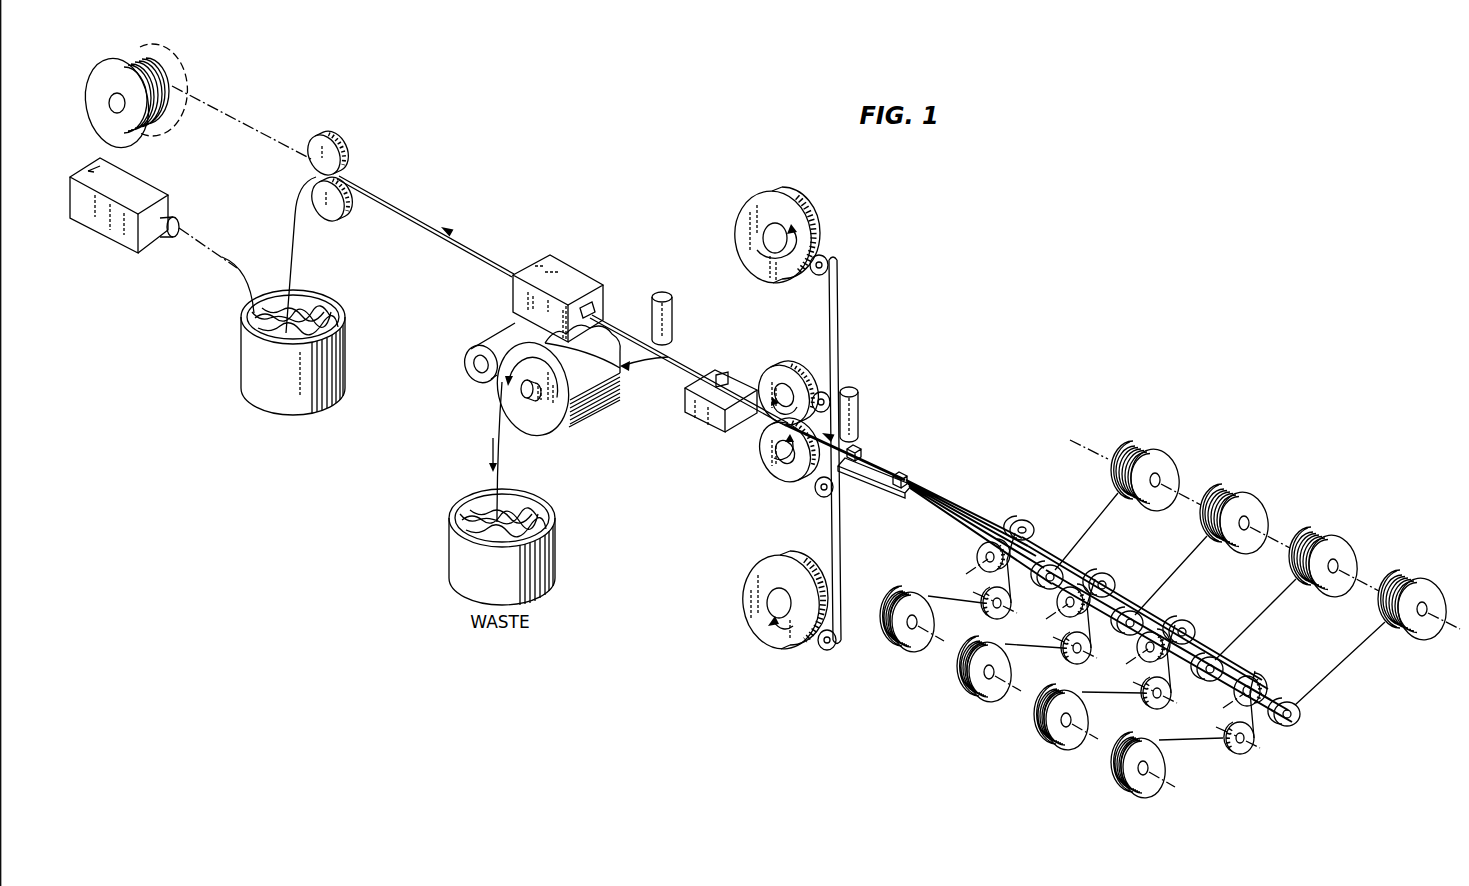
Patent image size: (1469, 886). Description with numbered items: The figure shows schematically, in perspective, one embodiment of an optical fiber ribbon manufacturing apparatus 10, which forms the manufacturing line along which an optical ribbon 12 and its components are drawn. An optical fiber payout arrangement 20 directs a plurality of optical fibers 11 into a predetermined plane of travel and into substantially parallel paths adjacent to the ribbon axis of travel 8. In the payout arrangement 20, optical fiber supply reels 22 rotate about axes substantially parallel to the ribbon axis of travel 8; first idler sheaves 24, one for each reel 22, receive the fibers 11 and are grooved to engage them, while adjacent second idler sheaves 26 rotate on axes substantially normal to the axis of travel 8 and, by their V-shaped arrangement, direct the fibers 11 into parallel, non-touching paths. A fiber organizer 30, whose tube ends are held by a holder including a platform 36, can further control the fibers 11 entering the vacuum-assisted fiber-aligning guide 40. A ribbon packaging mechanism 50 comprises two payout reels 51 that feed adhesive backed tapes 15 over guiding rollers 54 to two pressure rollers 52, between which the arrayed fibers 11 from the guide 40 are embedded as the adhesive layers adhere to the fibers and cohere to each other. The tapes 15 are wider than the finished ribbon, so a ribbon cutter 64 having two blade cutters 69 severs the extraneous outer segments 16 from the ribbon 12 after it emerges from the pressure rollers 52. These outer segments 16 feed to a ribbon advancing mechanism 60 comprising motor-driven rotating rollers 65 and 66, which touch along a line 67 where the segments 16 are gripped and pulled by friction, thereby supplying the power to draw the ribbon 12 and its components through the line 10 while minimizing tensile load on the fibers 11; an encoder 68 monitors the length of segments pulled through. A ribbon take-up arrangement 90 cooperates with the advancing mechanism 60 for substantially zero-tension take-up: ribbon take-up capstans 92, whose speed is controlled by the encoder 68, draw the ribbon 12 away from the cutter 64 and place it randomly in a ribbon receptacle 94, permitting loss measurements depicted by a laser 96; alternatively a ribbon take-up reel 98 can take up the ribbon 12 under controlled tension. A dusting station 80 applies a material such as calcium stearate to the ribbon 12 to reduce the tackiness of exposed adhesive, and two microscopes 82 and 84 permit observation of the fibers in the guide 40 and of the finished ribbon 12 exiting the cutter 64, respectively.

The ribbon axis of travel 8 is at (458, 226).
The optical fiber ribbon manufacturing apparatus 10 is at (601, 633).
The optical fibers 11 is at (1347, 662).
The optical ribbon 12 is at (403, 212).
The adhesive backed tapes 15 is at (842, 308).
The extraneous segments 16 is at (637, 382).
The optical fiber payout arrangement 20 is at (1170, 624).
The optical fiber supply reels 22 is at (980, 695).
The first idler sheaves 24 is at (994, 614).
The second idler sheaves 26 is at (978, 553).
The fiber organizer 30 is at (897, 468).
The platform 36 is at (872, 489).
The vacuum-assisted fiber-aligning guide 40 is at (862, 450).
The ribbon packaging mechanism 50 is at (767, 414).
The payout reels 51 is at (741, 233).
The pressure rollers 52 is at (764, 368).
The guiding rollers 54 is at (829, 261).
The ribbon advancing mechanism 60 is at (526, 422).
The ribbon cutter 64 is at (700, 417).
The rotating roller 65 is at (553, 423).
The rotating roller 66 is at (466, 352).
The line of contact 67 is at (493, 384).
The encoder 68 is at (525, 400).
The blade cutters 69 is at (722, 373).
The dusting station 80 is at (577, 280).
The microscope 82 is at (860, 402).
The microscope 84 is at (673, 310).
The ribbon take-up arrangement 90 is at (352, 184).
The ribbon take-up capstans 92 is at (340, 148).
The ribbon receptacle 94 is at (258, 385).
The laser 96 is at (130, 238).
The ribbon take-up reel 98 is at (171, 72).